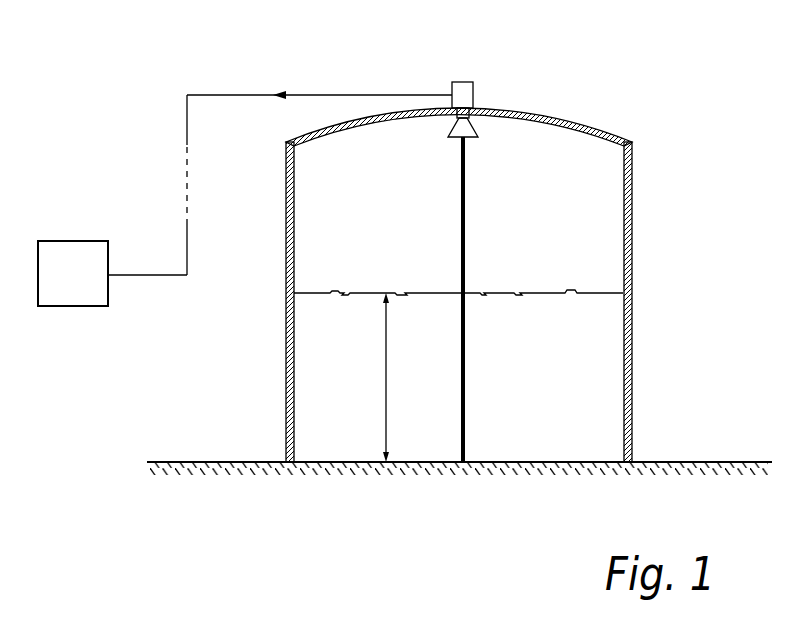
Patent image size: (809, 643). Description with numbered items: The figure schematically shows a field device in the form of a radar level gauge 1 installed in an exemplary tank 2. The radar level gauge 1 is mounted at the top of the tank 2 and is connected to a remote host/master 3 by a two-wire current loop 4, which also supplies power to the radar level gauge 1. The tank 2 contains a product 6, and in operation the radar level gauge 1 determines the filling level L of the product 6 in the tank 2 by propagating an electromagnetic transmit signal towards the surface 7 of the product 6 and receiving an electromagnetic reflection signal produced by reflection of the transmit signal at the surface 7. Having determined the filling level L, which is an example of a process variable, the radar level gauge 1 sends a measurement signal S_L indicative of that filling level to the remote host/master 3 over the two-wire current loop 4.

The radar level gauge 1 is at (480, 68).
The tank 2 is at (604, 226).
The remote host/master 3 is at (72, 241).
The two-wire current loop 4 is at (230, 95).
The product 6 is at (600, 372).
The surface 7 is at (567, 280).